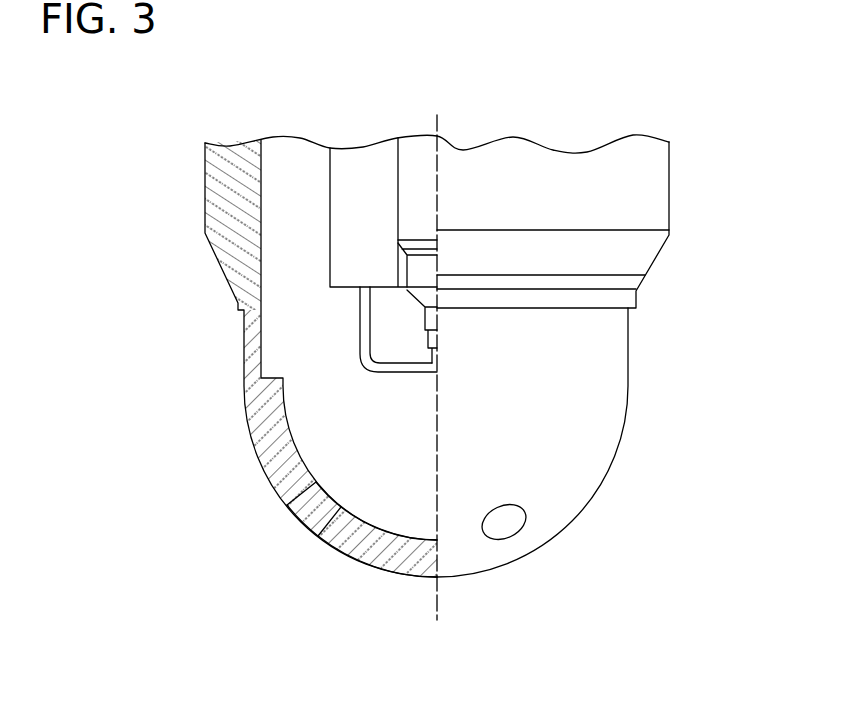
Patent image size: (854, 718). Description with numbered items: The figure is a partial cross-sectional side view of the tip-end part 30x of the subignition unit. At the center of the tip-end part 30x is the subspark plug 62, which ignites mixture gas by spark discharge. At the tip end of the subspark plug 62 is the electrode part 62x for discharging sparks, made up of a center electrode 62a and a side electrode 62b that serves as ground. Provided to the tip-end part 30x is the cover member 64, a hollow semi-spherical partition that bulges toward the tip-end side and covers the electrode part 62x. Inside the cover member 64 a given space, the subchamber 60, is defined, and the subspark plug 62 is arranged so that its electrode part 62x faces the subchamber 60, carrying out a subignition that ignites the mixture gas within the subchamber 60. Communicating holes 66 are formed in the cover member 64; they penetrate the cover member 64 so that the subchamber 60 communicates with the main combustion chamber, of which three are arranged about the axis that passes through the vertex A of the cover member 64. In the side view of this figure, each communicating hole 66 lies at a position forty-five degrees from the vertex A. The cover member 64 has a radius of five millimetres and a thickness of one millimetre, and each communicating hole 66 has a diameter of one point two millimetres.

The tip-end part 30x is at (660, 118).
The subchamber 60 is at (300, 405).
The subspark plug 62 is at (413, 130).
The center electrode 62a is at (401, 362).
The side electrode 62b is at (383, 378).
The electrode part 62x is at (381, 385).
The cover member 64 is at (358, 560).
The communicating hole 66 is at (298, 497).
The vertex A is at (435, 583).